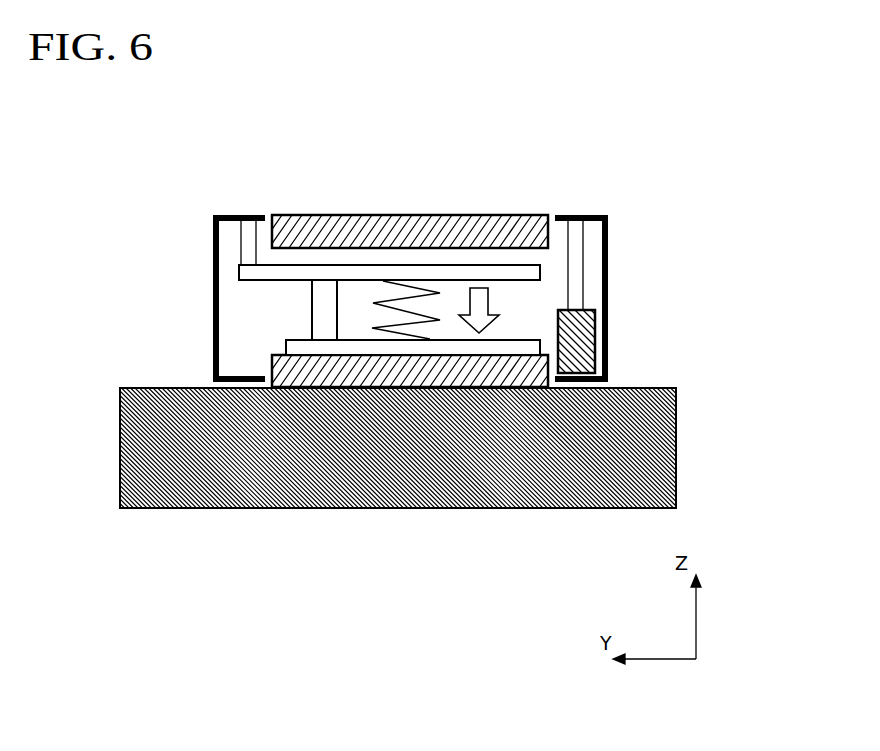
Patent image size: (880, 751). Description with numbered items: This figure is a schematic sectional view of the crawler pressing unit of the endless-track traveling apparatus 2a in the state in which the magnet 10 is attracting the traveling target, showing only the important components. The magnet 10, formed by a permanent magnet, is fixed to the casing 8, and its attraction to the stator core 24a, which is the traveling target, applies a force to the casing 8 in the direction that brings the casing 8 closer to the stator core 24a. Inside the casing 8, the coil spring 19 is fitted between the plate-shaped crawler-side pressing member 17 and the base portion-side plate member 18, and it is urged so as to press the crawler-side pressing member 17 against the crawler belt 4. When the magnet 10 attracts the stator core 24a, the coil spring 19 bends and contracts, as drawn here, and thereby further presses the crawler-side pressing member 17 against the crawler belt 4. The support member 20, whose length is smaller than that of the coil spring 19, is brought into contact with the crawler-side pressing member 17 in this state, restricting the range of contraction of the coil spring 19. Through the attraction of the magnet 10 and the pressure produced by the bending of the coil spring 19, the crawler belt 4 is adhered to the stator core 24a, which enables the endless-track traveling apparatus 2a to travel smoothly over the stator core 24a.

The endless-track traveling apparatus 2a is at (586, 183).
The crawler belt 4 is at (393, 215).
The casing 8 is at (607, 248).
The magnet 10 is at (590, 345).
The crawler-side pressing member 17 is at (283, 350).
The base portion-side plate member 18 is at (470, 265).
The coil spring 19 is at (382, 318).
The support member 20 is at (323, 295).
The stator core 24a is at (653, 418).